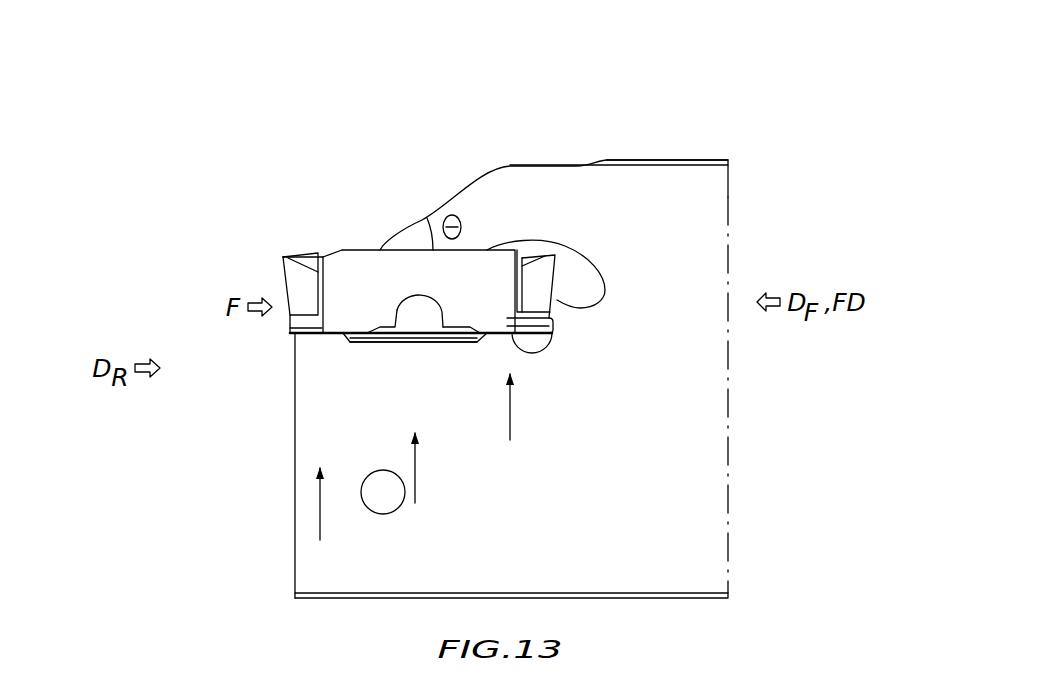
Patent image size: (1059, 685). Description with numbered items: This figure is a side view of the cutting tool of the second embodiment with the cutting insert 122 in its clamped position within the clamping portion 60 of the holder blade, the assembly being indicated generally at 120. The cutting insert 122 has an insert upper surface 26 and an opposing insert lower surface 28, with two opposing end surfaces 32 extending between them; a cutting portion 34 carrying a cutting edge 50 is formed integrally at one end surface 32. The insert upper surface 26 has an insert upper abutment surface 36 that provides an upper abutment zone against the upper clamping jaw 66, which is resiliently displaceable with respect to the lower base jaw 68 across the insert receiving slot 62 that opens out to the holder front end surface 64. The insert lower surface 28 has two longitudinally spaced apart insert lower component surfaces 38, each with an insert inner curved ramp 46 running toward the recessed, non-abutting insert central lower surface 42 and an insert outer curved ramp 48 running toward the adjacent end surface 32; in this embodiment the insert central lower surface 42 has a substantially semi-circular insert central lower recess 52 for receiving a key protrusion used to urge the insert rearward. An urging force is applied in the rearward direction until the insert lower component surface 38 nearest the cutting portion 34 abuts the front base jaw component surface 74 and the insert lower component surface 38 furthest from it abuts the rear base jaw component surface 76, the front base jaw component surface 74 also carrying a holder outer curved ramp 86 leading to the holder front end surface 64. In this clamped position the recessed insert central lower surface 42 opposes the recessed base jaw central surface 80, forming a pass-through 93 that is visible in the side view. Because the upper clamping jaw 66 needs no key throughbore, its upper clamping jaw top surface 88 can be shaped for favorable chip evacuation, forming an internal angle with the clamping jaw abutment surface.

The insert upper surface 26 is at (379, 69).
The insert lower surface 28 is at (397, 507).
The end surfaces 32 is at (285, 283).
The cutting portion 34 is at (297, 238).
The insert upper abutment surface 36 is at (380, 250).
The insert lower component surfaces 38 is at (415, 474).
The insert central lower surface 42 is at (390, 327).
The insert inner curved ramp 46 is at (378, 331).
The insert outer curved ramp 48 is at (552, 336).
The cutting edge 50 is at (285, 257).
The insert central lower recess 52 is at (402, 320).
The clamping portion 60 is at (619, 143).
The insert receiving slot 62 is at (357, 241).
The holder front end surface 64 is at (295, 556).
The upper clamping jaw 66 is at (712, 131).
The lower base jaw 68 is at (226, 516).
The front base jaw component surface 74 is at (321, 326).
The rear base jaw component surface 76 is at (506, 329).
The base jaw central surface 80 is at (443, 327).
The holder outer curved ramp 86 is at (292, 334).
The upper clamping jaw top surface 88 is at (440, 205).
The pass-through 93 is at (412, 333).
The tool assembly 120 is at (194, 194).
The cutting insert 122 is at (274, 106).